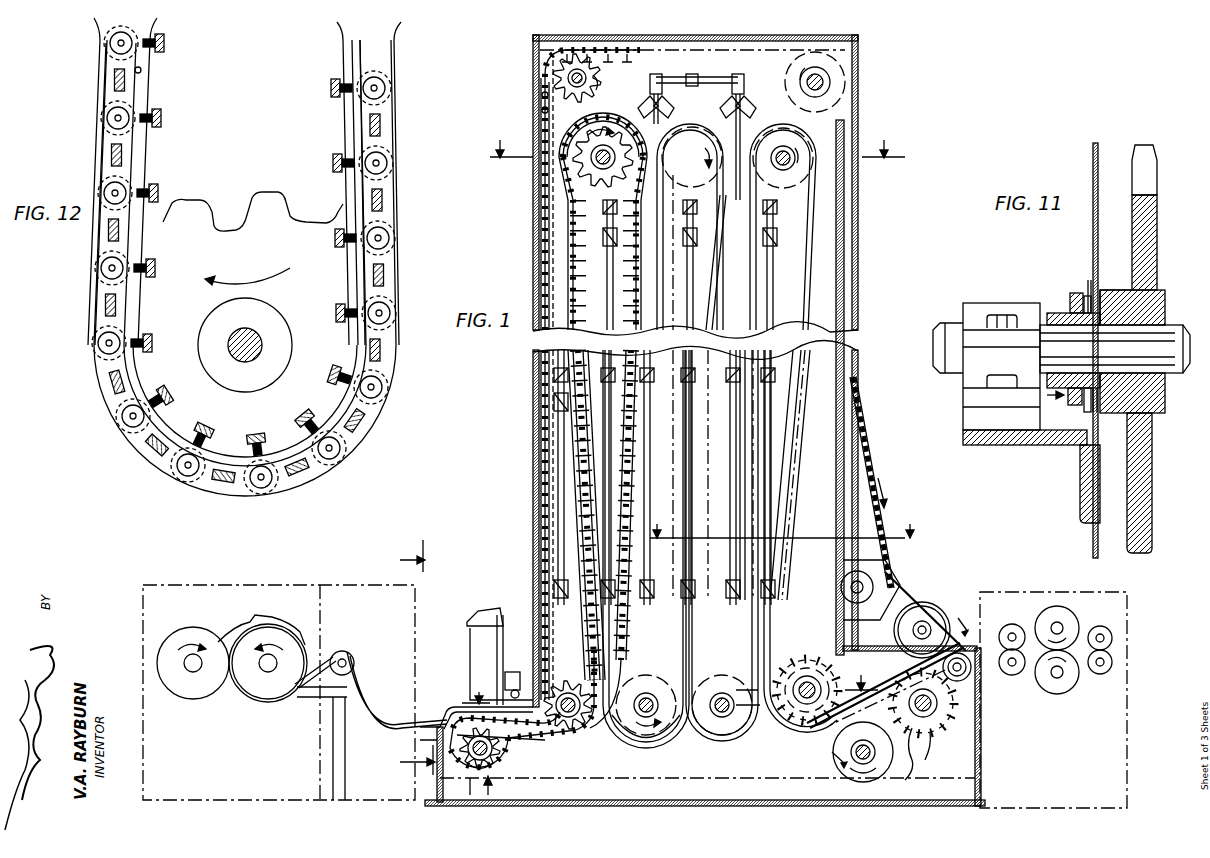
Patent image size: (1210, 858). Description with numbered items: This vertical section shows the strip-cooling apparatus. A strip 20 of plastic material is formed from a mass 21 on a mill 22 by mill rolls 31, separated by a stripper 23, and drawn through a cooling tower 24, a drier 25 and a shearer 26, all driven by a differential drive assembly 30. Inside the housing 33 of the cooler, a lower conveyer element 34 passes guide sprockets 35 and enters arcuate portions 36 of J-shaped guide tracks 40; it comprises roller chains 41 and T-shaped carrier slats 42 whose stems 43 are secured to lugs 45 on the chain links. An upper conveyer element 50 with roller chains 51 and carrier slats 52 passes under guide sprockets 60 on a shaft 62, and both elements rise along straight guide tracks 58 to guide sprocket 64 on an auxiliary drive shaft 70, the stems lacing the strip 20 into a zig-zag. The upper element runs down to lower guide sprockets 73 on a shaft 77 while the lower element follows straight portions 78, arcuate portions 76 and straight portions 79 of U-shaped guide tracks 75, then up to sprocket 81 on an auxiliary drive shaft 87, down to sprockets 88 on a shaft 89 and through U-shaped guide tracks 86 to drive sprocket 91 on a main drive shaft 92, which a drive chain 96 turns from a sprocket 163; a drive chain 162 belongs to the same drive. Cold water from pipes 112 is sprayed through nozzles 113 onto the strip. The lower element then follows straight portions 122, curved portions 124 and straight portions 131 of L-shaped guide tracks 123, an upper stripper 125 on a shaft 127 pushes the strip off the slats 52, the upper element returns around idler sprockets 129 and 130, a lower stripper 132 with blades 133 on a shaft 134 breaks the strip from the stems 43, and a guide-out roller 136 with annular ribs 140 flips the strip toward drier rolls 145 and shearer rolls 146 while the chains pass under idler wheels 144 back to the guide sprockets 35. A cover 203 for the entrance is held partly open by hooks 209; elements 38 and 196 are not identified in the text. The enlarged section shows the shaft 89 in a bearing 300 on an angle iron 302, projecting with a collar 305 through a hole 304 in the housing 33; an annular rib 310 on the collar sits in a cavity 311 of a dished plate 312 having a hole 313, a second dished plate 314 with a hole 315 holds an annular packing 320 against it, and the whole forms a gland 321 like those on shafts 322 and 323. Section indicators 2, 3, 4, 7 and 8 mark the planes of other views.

In FIG. 1, the strip 20 is at (363, 710).
In FIG. 1, the mass 21 is at (245, 620).
In FIG. 1, the mill 22 is at (268, 585).
In FIG. 1, the stripper 23 is at (308, 700).
In FIG. 1, the cooling tower 24 is at (530, 431).
In FIG. 1, the drier 25 is at (998, 628).
In FIG. 1, the shearer 26 is at (1093, 605).
In FIG. 1, the differential drive assembly 30 is at (921, 594).
In FIG. 1, the mill rolls 31 is at (196, 700).
In FIG. 1, the housing 33 is at (533, 445).
In FIG. 11, the housing 33 is at (1096, 160).
In FIG. 12, the lower conveyer element 34 is at (96, 146).
In FIG. 1, the lower conveyer element 34 is at (488, 796).
In FIG. 1, the guide sprocket 35 is at (470, 796).
In FIG. 1, the arcuate portions 36 is at (593, 722).
In FIG. 1, the sprocket 38 is at (470, 752).
In FIG. 1, the guide tracks 40 is at (590, 640).
In FIG. 1, the roller chains 41 is at (707, 773).
In FIG. 1, the carrier slats 42 is at (458, 770).
In FIG. 1, the stems 43 is at (520, 727).
In FIG. 12, the lugs 45 is at (108, 300).
In FIG. 1, the upper conveyer element 50 is at (585, 52).
In FIG. 1, the roller chains 51 is at (547, 75).
In FIG. 12, the carrier slats 52 is at (157, 192).
In FIG. 1, the carrier slats 52 is at (545, 95).
In FIG. 1, the straight guide tracks 58 is at (535, 385).
In FIG. 1, the guide sprockets 60 is at (578, 714).
In FIG. 1, the shaft 62 is at (572, 718).
In FIG. 1, the guide sprocket 64 is at (595, 160).
In FIG. 1, the auxiliary drive shaft 70 is at (568, 190).
In FIG. 12, the lower guide sprockets 73 is at (270, 200).
In FIG. 1, the lower guide sprockets 73 is at (630, 700).
In FIG. 12, the U-shaped guide tracks 75 is at (143, 97).
In FIG. 1, the U-shaped guide tracks 75 is at (621, 332).
In FIG. 12, the arcuate portions 76 is at (182, 440).
In FIG. 1, the arcuate portions 76 is at (652, 742).
In FIG. 12, the shaft 77 is at (250, 335).
In FIG. 1, the shaft 77 is at (647, 700).
In FIG. 12, the straight portions 78 is at (140, 70).
In FIG. 12, the straight portions 79 is at (365, 113).
In FIG. 1, the sprocket 81 is at (708, 76).
In FIG. 1, the U-shaped guide tracks 86 is at (728, 340).
In FIG. 1, the auxiliary drive shaft 87 is at (698, 145).
In FIG. 1, the sprockets 88 is at (718, 728).
In FIG. 11, the sprockets 88 is at (1157, 222).
In FIG. 1, the shaft 89 is at (728, 700).
In FIG. 11, the shaft 89 is at (1170, 338).
In FIG. 1, the drive sprocket 91 is at (798, 125).
In FIG. 1, the main drive shaft 92 is at (790, 156).
In FIG. 1, the drive chain 96 is at (860, 420).
In FIG. 1, the pipes 112 is at (688, 330).
In FIG. 1, the nozzles 113 is at (720, 608).
In FIG. 1, the straight portions 122 is at (787, 450).
In FIG. 1, the guide tracks 123 is at (790, 496).
In FIG. 1, the curved portions 124 is at (790, 735).
In FIG. 1, the upper stripper 125 is at (792, 655).
In FIG. 1, the shaft 127 is at (810, 686).
In FIG. 1, the idler sprocket 129 is at (835, 82).
In FIG. 1, the idler sprocket 130 is at (545, 62).
In FIG. 1, the straight portions 131 is at (835, 735).
In FIG. 1, the lower stripper 132 is at (927, 760).
In FIG. 1, the blades 133 is at (912, 780).
In FIG. 1, the shaft 134 is at (920, 690).
In FIG. 1, the guide-out roller 136 is at (972, 670).
In FIG. 1, the annular ribs 140 is at (935, 730).
In FIG. 1, the idler wheels 144 is at (882, 782).
In FIG. 1, the drier rolls 145 is at (1020, 670).
In FIG. 1, the shearer rolls 146 is at (1070, 682).
In FIG. 1, the drive chain 162 is at (875, 597).
In FIG. 1, the sprocket 163 is at (885, 575).
In FIG. 1, the latch 196 is at (505, 680).
In FIG. 1, the cover 203 is at (480, 612).
In FIG. 1, the hooks 209 is at (503, 620).
In FIG. 11, the bearing 300 is at (978, 310).
In FIG. 11, the angle iron 302 is at (1030, 446).
In FIG. 11, the hole 304 is at (1095, 412).
In FIG. 11, the collar 305 is at (1053, 308).
In FIG. 11, the annular rib 310 is at (1090, 295).
In FIG. 11, the cavity 311 is at (1090, 412).
In FIG. 11, the dished plate 312 is at (1082, 408).
In FIG. 11, the hole 313 is at (1097, 300).
In FIG. 11, the dished plate 314 is at (1086, 300).
In FIG. 11, the hole 315 is at (1073, 300).
In FIG. 11, the annular packing 320 is at (1068, 392).
In FIG. 11, the gland 321 is at (1047, 395).
In FIG. 1, the shaft 322 is at (823, 78).
In FIG. 1, the shaft 323 is at (580, 76).
In FIG. 1, the section line 2 is at (697, 141).
In FIG. 1, the section line 3 is at (670, 682).
In FIG. 1, the section line 4 is at (894, 685).
In FIG. 1, the section line 7 is at (782, 523).
In FIG. 1, the section line 8 is at (411, 657).